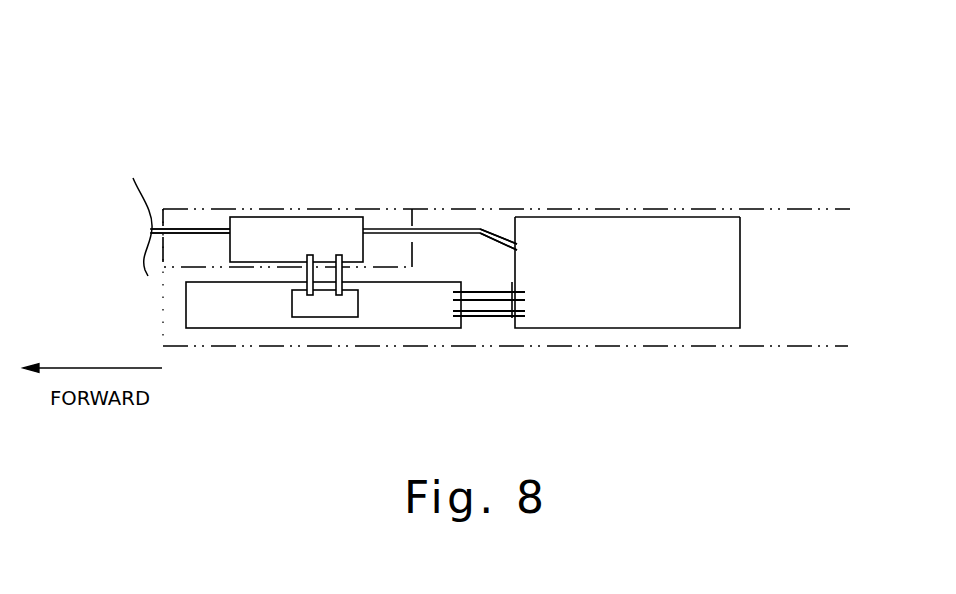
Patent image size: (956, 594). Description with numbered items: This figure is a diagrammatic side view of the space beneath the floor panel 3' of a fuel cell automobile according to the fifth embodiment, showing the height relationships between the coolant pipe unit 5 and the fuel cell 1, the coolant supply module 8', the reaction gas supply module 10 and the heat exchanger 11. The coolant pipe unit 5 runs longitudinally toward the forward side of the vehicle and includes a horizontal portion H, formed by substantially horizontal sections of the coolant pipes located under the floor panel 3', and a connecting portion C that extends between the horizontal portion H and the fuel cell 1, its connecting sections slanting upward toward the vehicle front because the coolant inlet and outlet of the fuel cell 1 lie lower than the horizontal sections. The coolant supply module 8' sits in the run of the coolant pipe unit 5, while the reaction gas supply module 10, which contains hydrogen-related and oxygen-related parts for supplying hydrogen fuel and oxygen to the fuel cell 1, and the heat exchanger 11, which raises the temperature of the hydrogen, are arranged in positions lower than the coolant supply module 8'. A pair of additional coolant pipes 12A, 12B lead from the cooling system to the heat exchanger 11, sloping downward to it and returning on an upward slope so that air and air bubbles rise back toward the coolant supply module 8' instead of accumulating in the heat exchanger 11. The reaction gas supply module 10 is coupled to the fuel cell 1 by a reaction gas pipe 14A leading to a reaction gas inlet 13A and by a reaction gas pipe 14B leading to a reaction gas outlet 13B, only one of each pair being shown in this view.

The coolant pipe unit 5 is at (217, 123).
The coolant supply module 8' is at (296, 195).
The horizontal portion H is at (445, 123).
The reaction gas pipes 14B is at (464, 292).
The connecting portion C is at (600, 60).
The reaction gas outlets 13B is at (512, 290).
The floor panel 3' is at (506, 167).
The additional coolant pipe 12B is at (306, 271).
The heat exchanger 11 is at (318, 307).
The additional coolant pipe 12A is at (343, 269).
The reaction gas supply module 10 is at (415, 310).
The reaction gas pipes 14A is at (475, 313).
The reaction gas inlets 13A is at (495, 318).
The fuel cell 1 is at (630, 330).